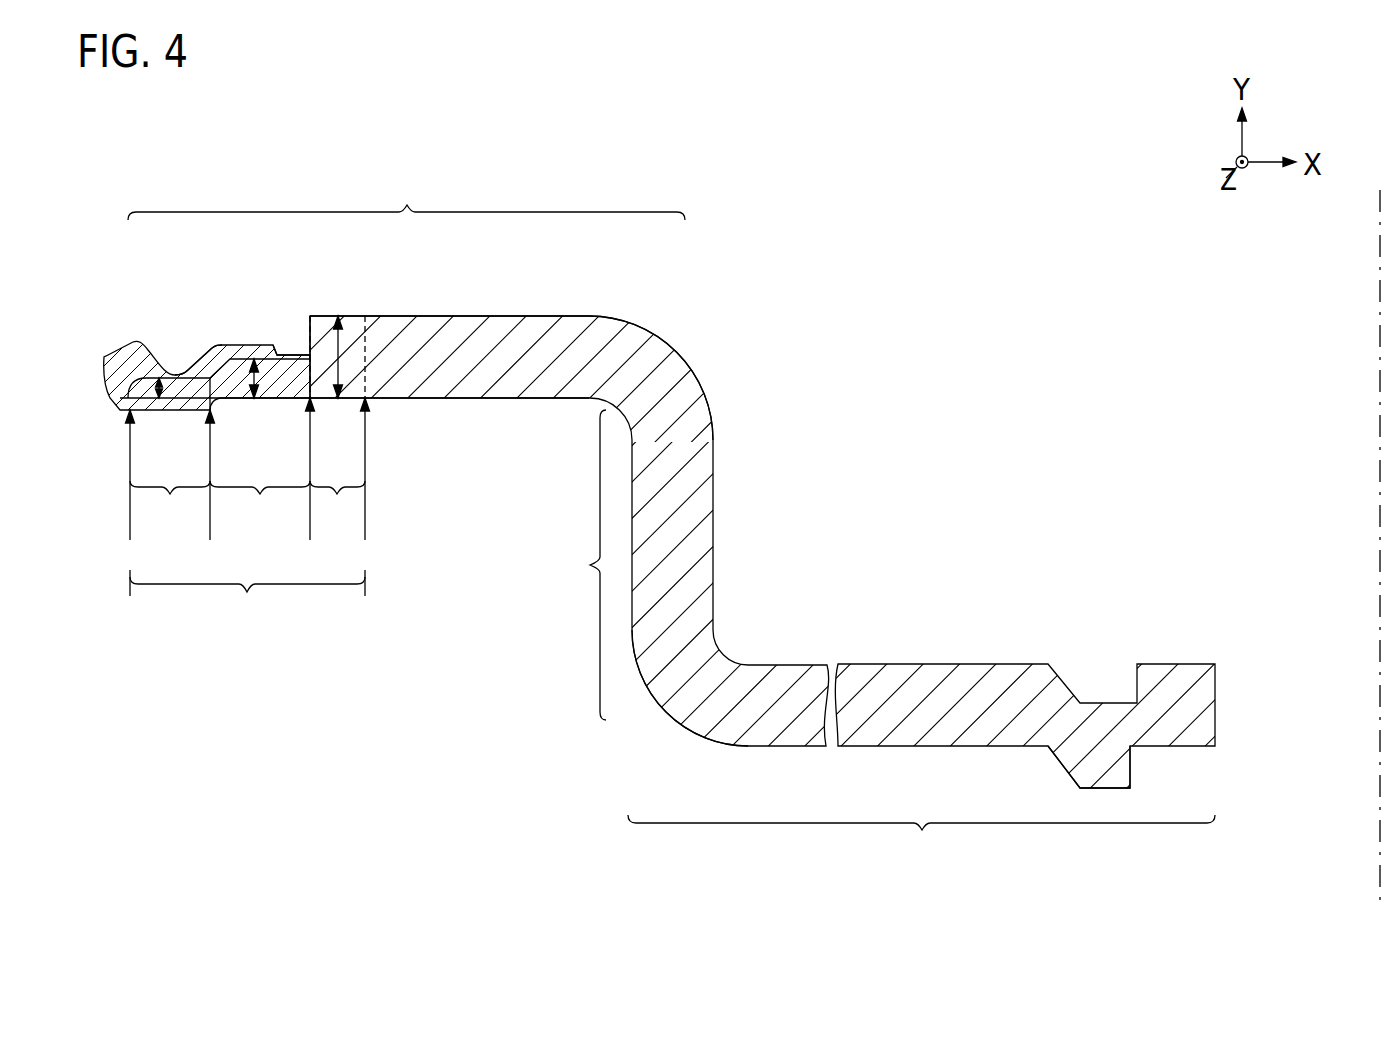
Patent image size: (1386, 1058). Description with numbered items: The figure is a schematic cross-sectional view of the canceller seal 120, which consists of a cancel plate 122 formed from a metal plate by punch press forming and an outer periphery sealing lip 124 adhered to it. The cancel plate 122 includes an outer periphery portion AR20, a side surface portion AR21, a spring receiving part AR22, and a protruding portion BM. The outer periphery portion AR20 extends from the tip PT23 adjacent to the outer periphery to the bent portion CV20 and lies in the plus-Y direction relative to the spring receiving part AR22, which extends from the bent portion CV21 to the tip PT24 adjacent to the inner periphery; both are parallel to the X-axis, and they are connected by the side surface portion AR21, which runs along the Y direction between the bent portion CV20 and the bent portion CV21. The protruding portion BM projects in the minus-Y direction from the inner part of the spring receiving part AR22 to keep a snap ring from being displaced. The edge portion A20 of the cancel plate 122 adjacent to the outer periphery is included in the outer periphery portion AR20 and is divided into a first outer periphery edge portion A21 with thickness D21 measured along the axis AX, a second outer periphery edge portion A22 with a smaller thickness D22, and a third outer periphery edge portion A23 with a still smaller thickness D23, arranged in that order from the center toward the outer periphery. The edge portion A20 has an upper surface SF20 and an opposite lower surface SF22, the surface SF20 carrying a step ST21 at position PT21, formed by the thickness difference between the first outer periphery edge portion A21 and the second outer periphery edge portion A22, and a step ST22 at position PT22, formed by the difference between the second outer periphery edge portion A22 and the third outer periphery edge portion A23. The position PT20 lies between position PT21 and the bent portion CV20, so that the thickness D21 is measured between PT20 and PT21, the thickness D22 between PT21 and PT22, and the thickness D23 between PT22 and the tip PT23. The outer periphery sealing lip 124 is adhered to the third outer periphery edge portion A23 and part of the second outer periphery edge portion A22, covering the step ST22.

The canceller seal 120 is at (1197, 364).
The cancel plate 122 is at (381, 731).
The outer periphery sealing lip 124 is at (103, 363).
The axis AX is at (1380, 388).
The outer periphery portion AR20 is at (406, 197).
The side surface portion AR21 is at (561, 565).
The spring receiving part AR22 is at (921, 840).
The step ST21 is at (310, 337).
The step ST22 is at (197, 372).
The surface SF20 is at (323, 314).
The surface SF22 is at (372, 401).
The bent portion CV20 is at (686, 357).
The bent portion CV21 is at (661, 719).
The thickness D21 is at (341, 370).
The thickness D22 is at (258, 388).
The thickness D23 is at (172, 390).
The first outer periphery edge portion A21 is at (337, 505).
The second outer periphery edge portion A22 is at (260, 505).
The third outer periphery edge portion A23 is at (170, 505).
The edge portion A20 is at (247, 602).
The position PT20 is at (371, 497).
The position PT21 is at (292, 485).
The position PT22 is at (213, 491).
The tip PT23 is at (135, 503).
The tip PT24 is at (1214, 652).
The protruding portion BM is at (1113, 758).